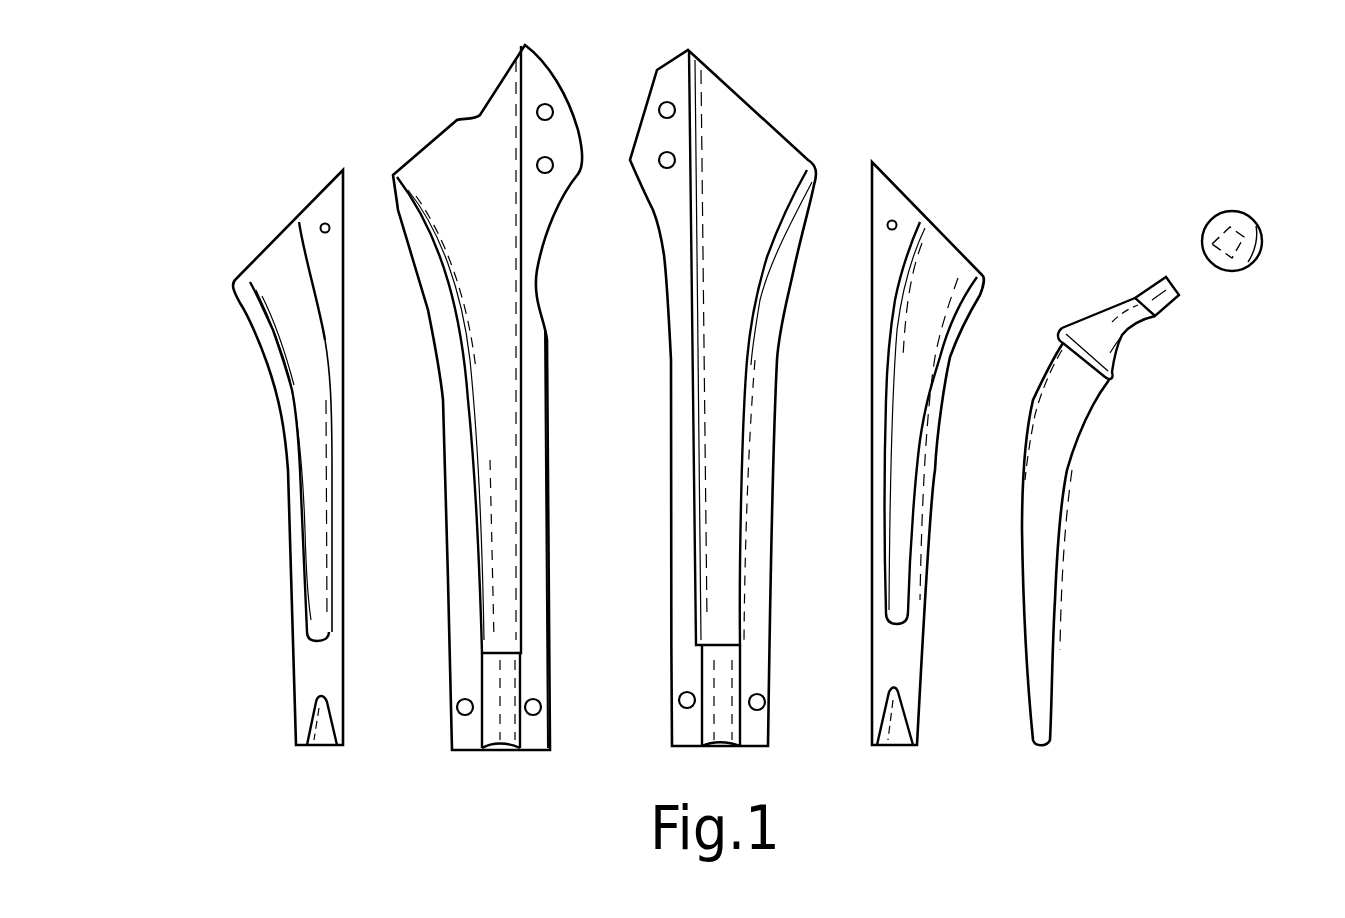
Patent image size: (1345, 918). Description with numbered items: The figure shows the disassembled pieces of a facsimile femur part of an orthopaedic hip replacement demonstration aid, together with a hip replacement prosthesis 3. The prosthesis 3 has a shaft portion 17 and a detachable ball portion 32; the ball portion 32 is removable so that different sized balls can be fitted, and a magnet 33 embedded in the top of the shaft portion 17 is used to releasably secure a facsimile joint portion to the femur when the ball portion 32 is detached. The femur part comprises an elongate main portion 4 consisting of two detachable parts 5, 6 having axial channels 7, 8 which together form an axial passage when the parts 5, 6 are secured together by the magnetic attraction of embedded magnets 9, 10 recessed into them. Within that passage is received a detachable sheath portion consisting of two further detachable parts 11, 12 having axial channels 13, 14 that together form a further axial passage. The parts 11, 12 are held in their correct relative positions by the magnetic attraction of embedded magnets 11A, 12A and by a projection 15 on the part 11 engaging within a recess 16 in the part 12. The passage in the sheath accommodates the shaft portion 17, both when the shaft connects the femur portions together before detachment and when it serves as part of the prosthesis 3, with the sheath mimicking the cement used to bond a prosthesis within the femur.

The hip replacement prosthesis 3 is at (1098, 304).
The elongate main portion 4 is at (547, 203).
The detachable part 5 is at (538, 232).
The detachable part 6 is at (674, 199).
The axial channel 7 is at (498, 388).
The axial channel 8 is at (720, 362).
The embedded magnet 9 is at (538, 160).
The embedded magnet 10 is at (660, 156).
The detachable part 11 is at (331, 190).
The embedded magnet 11A is at (320, 224).
The detachable part 12 is at (893, 667).
The embedded magnet 12A is at (893, 223).
The axial channel 13 is at (300, 322).
The axial channel 14 is at (923, 327).
The projection 15 is at (314, 726).
The recess 16 is at (895, 717).
The shaft portion 17 is at (1062, 421).
The detachable ball portion 32 is at (1260, 260).
The magnet 33 is at (1168, 300).